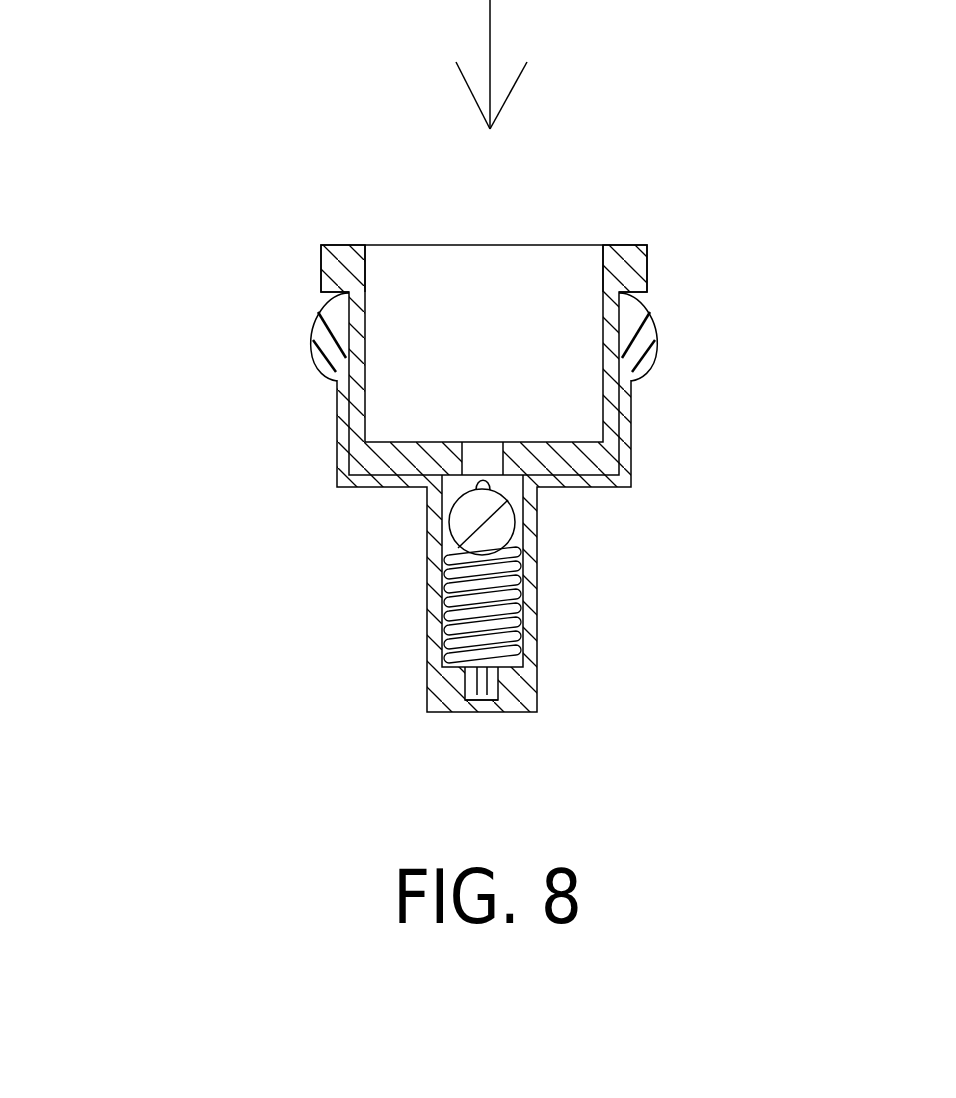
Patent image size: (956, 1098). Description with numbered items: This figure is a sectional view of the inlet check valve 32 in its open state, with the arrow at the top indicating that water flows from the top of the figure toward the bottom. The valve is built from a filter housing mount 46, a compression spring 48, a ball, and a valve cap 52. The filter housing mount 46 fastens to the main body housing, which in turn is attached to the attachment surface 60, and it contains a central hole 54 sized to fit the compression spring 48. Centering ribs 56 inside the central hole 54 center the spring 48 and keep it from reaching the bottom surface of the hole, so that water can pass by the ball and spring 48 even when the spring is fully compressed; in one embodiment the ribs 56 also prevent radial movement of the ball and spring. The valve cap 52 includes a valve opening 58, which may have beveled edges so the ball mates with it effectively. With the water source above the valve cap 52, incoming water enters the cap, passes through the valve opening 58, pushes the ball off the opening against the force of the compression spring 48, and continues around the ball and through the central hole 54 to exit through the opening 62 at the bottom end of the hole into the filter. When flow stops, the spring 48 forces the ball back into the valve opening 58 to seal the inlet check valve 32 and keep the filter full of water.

The inlet check valve 32 is at (243, 594).
The filter housing mount 46 is at (635, 352).
The compression spring 48 is at (467, 492).
The valve cap 52 is at (628, 282).
The central hole 54 is at (462, 663).
The centering ribs 56 is at (478, 683).
The valve opening 58 is at (482, 462).
The attachment surface 60 is at (635, 382).
The opening 62 is at (480, 700).